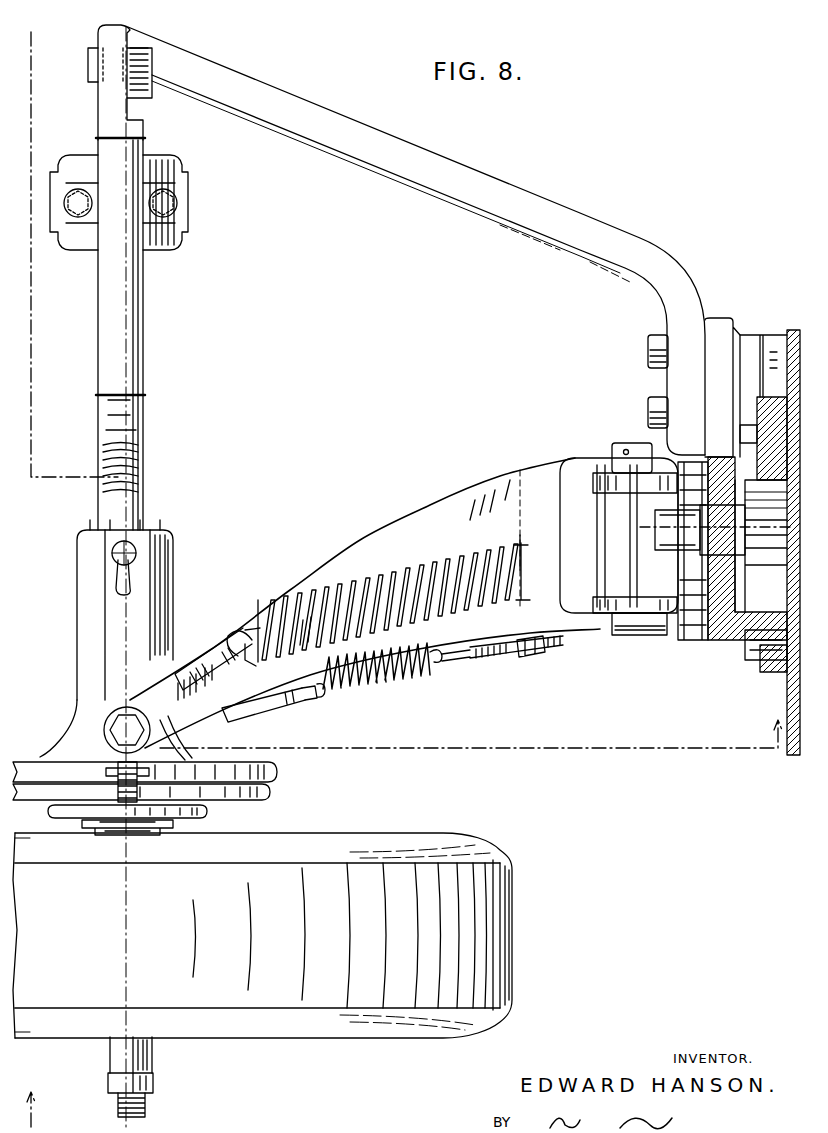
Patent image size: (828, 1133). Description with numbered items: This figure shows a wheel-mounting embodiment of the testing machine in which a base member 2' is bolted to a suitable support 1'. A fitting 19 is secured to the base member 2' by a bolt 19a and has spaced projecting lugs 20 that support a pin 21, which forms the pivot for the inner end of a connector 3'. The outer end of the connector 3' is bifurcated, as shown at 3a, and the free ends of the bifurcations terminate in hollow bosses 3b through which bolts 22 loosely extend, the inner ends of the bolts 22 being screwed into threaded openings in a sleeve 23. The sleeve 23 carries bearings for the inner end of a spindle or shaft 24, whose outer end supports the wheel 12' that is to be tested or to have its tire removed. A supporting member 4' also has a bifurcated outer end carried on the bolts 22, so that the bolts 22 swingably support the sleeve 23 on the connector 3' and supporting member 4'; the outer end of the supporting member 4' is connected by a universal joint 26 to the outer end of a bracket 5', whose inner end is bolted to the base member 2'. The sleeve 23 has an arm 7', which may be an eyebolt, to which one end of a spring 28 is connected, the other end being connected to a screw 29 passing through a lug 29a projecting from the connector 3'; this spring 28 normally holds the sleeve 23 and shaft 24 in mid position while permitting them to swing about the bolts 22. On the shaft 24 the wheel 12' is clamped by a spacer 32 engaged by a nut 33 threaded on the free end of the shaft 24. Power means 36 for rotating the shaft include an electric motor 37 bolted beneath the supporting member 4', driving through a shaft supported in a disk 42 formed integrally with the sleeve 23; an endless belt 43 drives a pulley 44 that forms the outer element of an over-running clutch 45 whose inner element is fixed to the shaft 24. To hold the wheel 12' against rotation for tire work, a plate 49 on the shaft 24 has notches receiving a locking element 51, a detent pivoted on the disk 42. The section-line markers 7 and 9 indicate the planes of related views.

The support 1' is at (779, 557).
The base member 2' is at (747, 503).
The connector 3' is at (365, 601).
The bifurcated outer end 3a is at (238, 698).
The hollow bosses 3b is at (108, 718).
The supporting member 4' is at (134, 334).
The bracket 5' is at (434, 242).
The section line 7 is at (404, 894).
The arm 7' is at (273, 709).
The section line 9 is at (31, 32).
The wheel 12' is at (262, 926).
The fitting 19 is at (688, 635).
The bolt 19a is at (700, 522).
The projecting lugs 20 is at (600, 493).
The pin 21 is at (620, 528).
The bolts 22 is at (118, 734).
The sleeve 23 is at (167, 578).
The spindle or shaft 24 is at (120, 1103).
The universal joint 26 is at (110, 99).
The spring 28 is at (383, 693).
The screw 29 is at (492, 664).
The lug 29a is at (523, 661).
The spacer 32 is at (140, 1065).
The nut 33 is at (147, 1078).
The power means 36 is at (131, 214).
The electric motor 37 is at (183, 225).
The disk 42 is at (276, 771).
The endless belt 43 is at (70, 813).
The pulley 44 is at (207, 811).
The over-running clutch 45 is at (83, 834).
The plate 49 is at (268, 792).
The locking element 51 is at (127, 793).